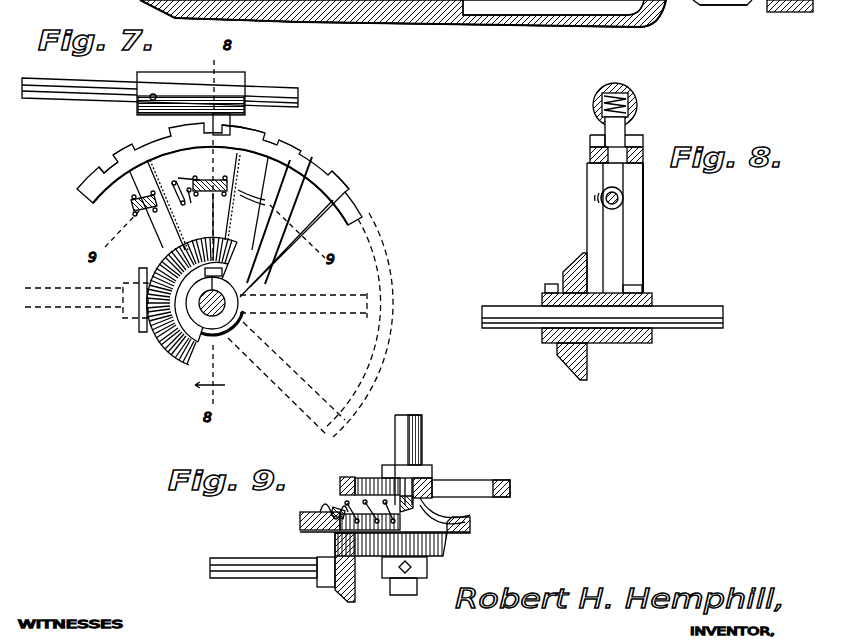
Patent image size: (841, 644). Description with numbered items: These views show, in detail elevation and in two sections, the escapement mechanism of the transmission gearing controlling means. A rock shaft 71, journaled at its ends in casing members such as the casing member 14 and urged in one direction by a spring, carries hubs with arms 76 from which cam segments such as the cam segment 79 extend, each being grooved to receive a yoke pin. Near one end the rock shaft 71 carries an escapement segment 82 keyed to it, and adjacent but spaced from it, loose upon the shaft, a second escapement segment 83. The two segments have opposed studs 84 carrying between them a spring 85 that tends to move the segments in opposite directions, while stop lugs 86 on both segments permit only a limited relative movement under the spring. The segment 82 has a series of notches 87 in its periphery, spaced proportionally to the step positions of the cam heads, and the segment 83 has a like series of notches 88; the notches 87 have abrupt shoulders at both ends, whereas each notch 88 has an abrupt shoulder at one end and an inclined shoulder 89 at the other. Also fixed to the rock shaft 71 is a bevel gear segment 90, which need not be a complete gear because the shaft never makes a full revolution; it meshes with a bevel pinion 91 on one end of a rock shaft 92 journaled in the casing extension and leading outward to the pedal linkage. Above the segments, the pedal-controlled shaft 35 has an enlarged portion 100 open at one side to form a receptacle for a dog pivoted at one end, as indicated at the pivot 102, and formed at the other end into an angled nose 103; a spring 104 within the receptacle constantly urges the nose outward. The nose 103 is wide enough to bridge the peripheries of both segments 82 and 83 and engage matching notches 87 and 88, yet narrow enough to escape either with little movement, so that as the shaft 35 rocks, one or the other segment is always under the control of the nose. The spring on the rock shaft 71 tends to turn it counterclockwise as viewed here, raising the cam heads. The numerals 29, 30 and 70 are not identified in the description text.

In FIG. 7, the casing member 14 is at (410, 15).
In FIG. 7, the bar 29 is at (728, 6).
In FIG. 7, the bar 30 is at (678, 5).
In FIG. 7, the shaft 35 is at (73, 88).
In FIG. 7, the frame plate 70 is at (222, 0).
In FIG. 7, the rock shaft 71 is at (240, 318).
In FIG. 8, the rock shaft 71 is at (697, 330).
In FIG. 9, the rock shaft 71 is at (422, 437).
In FIG. 7, the arm 76 is at (272, 376).
In FIG. 7, the cam segment 79 is at (365, 335).
In FIG. 7, the escapement segment 82 is at (283, 262).
In FIG. 8, the escapement segment 82 is at (640, 165).
In FIG. 9, the escapement segment 82 is at (506, 480).
In FIG. 7, the escapement segment 83 is at (88, 192).
In FIG. 8, the escapement segment 83 is at (590, 158).
In FIG. 9, the escapement segment 83 is at (300, 520).
In FIG. 7, the stud 84 is at (215, 180).
In FIG. 8, the stud 84 is at (618, 199).
In FIG. 9, the stud 84 is at (405, 496).
In FIG. 7, the spring 85 is at (190, 203).
In FIG. 8, the spring 85 is at (600, 204).
In FIG. 9, the spring 85 is at (335, 500).
In FIG. 7, the stop lug 86 is at (253, 196).
In FIG. 9, the stop lug 86 is at (468, 516).
In FIG. 7, the notch 87 is at (288, 140).
In FIG. 8, the notch 87 is at (640, 140).
In FIG. 7, the notch 88 is at (114, 152).
In FIG. 8, the notch 88 is at (588, 144).
In FIG. 7, the inclined shoulder 89 is at (100, 167).
In FIG. 8, the inclined shoulder 89 is at (592, 136).
In FIG. 7, the gear segment 90 is at (180, 357).
In FIG. 8, the gear segment 90 is at (573, 268).
In FIG. 9, the gear segment 90 is at (440, 551).
In FIG. 7, the bevel pinion 91 is at (140, 320).
In FIG. 9, the bevel pinion 91 is at (345, 605).
In FIG. 7, the rock shaft 92 is at (55, 308).
In FIG. 9, the rock shaft 92 is at (258, 578).
In FIG. 7, the enlarged portion 100 is at (191, 93).
In FIG. 8, the enlarged portion 100 is at (634, 105).
In FIG. 7, the pivot 102 is at (153, 94).
In FIG. 7, the nose 103 is at (226, 124).
In FIG. 8, the nose 103 is at (600, 122).
In FIG. 8, the spring 104 is at (617, 84).